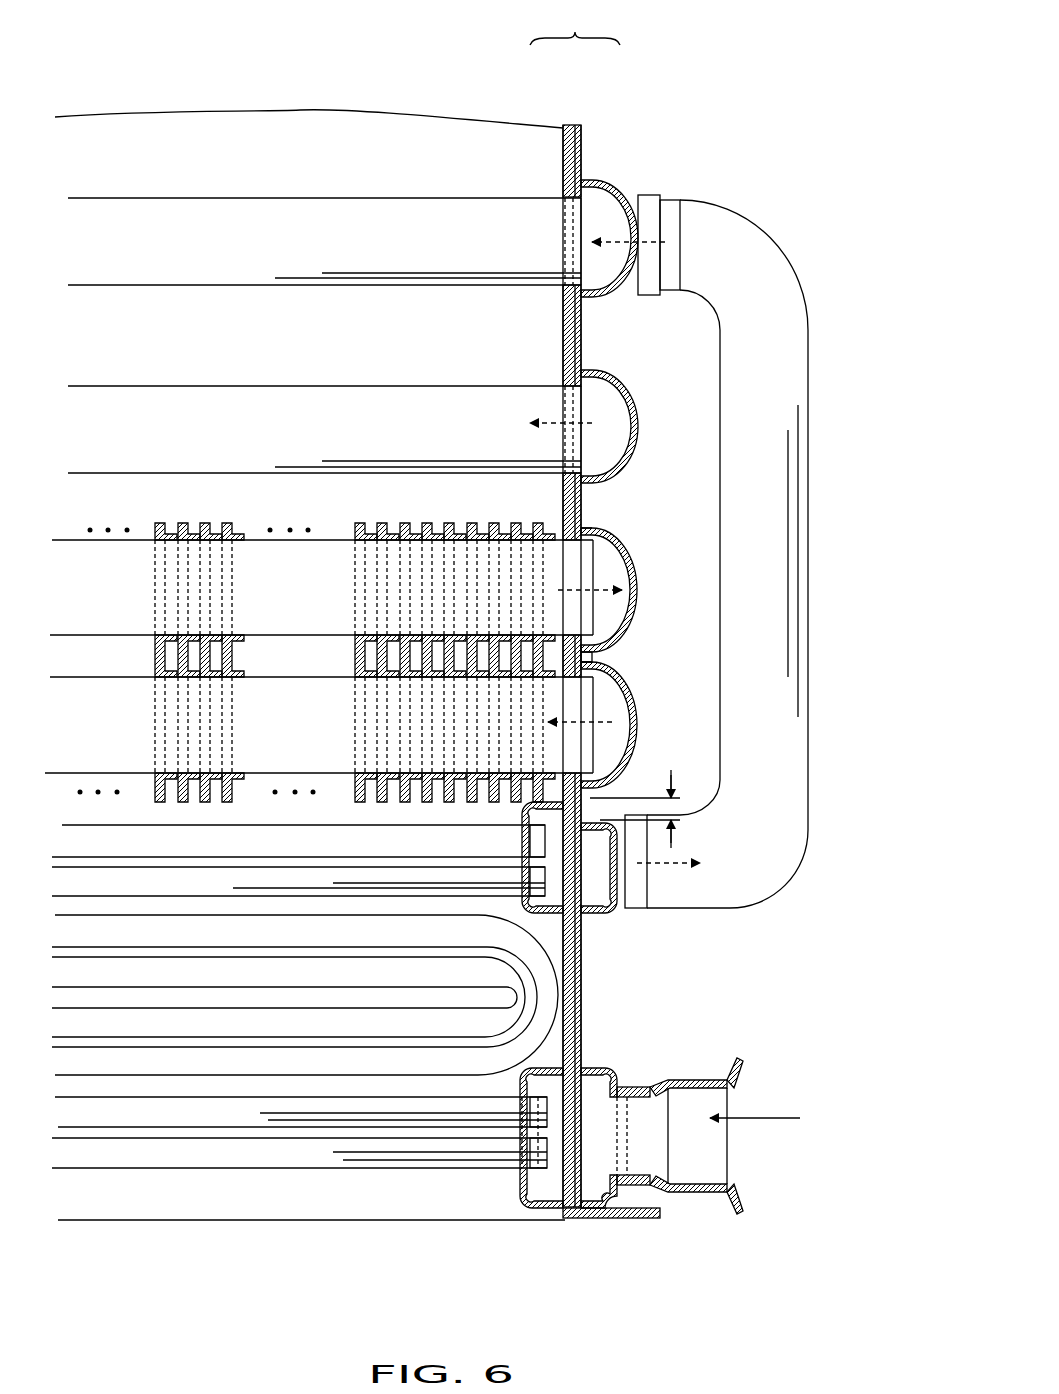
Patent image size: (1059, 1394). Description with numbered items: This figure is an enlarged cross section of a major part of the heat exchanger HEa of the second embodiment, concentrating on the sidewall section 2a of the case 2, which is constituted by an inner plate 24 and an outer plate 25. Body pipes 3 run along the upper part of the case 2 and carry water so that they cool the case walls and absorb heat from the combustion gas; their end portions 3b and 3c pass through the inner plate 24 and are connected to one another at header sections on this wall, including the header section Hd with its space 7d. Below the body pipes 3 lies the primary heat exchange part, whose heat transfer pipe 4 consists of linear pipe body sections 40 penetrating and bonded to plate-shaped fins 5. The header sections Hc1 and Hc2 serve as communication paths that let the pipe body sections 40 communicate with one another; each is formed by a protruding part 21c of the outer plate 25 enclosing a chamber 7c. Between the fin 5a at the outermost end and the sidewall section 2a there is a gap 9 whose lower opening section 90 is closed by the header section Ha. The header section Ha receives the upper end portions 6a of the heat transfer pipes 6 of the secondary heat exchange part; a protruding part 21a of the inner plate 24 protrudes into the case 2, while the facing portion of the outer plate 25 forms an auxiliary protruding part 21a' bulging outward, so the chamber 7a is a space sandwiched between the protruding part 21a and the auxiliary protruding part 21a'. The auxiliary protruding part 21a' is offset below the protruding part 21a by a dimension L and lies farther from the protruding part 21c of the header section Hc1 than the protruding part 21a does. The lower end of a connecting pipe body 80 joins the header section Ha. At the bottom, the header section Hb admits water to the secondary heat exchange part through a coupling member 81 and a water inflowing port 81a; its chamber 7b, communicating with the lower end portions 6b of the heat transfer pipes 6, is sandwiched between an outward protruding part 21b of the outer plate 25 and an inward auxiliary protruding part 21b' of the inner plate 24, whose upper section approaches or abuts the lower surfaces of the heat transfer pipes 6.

The heat exchanger HEa is at (183, 78).
The case 2 is at (588, 166).
The sidewall section 2a is at (575, 25).
The inner plate 24 is at (563, 130).
The outer plate 25 is at (581, 130).
The body pipe 3 is at (244, 217).
The end portion of body pipe 3b is at (563, 233).
The end portion of body pipe 3c is at (563, 420).
The heat transfer pipe 4 is at (150, 530).
The fin 5 is at (202, 520).
The fin of outermost end portion 5a is at (548, 533).
The pipe body section 40 is at (312, 566).
The lower opening section 90 is at (555, 790).
The header 7d is at (598, 392).
The header section Hd is at (643, 388).
The chamber 7c is at (605, 566).
The protruding part 21c is at (610, 537).
The gap 9 is at (600, 655).
The header section Hc2 is at (640, 590).
The header section Hc1 is at (640, 722).
The connecting pipe body 80 is at (797, 335).
The auxiliary protruding part 21a' is at (706, 874).
The dimension L is at (643, 809).
The chamber 7a is at (612, 908).
The header section Ha is at (590, 904).
The upper end portion 6a is at (530, 885).
The protruding part 21a is at (305, 995).
The heat transfer pipe 6 is at (283, 1150).
The lower end portion 6b is at (547, 1150).
The auxiliary protruding part 21b' is at (496, 1166).
The chamber 7b is at (595, 1162).
The header section Hb is at (600, 1068).
The protruding part 21b is at (624, 1241).
The coupling member 81 is at (712, 1200).
The water inflowing port 81a is at (722, 1108).